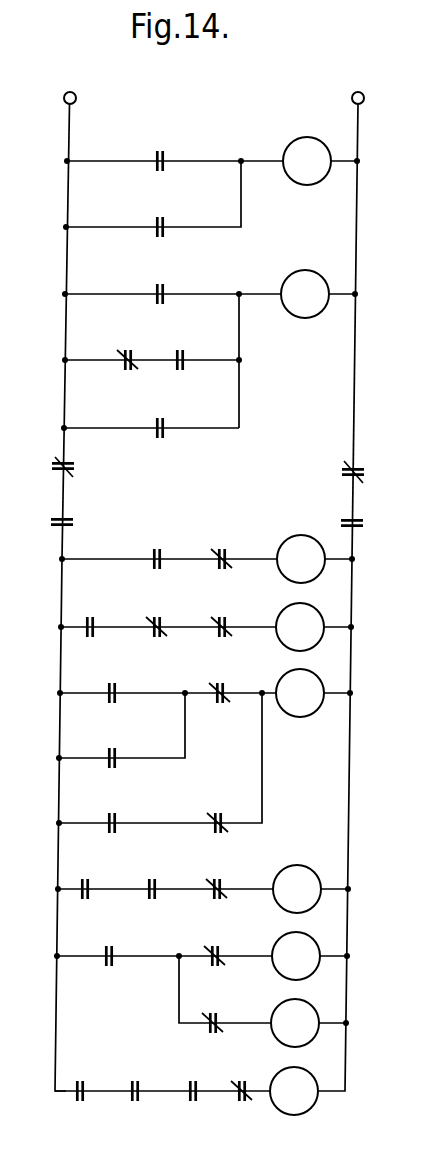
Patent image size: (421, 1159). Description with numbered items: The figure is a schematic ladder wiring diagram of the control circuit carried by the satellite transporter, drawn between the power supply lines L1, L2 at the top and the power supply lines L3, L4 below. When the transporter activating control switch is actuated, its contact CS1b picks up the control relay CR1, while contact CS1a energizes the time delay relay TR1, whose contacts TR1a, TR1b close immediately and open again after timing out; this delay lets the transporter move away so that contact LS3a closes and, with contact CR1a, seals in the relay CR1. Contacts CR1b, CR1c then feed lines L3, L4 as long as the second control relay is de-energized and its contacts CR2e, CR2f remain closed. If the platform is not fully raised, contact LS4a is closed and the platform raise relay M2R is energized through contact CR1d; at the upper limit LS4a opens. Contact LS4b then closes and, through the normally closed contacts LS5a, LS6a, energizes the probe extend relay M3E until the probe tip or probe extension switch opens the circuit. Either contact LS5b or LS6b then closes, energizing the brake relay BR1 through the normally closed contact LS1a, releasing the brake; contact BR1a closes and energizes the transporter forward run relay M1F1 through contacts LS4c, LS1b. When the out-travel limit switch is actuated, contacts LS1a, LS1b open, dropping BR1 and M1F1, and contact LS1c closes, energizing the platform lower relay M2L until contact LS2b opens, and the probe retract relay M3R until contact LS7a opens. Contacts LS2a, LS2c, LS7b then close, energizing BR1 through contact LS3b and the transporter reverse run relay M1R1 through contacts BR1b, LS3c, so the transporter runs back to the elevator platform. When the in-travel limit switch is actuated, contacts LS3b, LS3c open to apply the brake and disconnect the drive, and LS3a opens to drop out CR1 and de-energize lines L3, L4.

The power supply line L1 is at (72, 313).
The power supply line L2 is at (357, 314).
The power supply line L3 is at (48, 819).
The power supply line L4 is at (350, 820).
The transporter activating control switch contact CS1a is at (185, 153).
The transporter activating control switch contact CS1b is at (187, 289).
The time delay relay TR1 is at (307, 161).
The time delay relay contact TR1a is at (185, 220).
The time delay relay contact TR1b is at (185, 419).
The control relay CR1 is at (305, 294).
The control relay contact CR1a is at (205, 350).
The control relay contact CR1b is at (87, 515).
The control relay contact CR1c is at (329, 512).
The control relay contact CR1d is at (171, 547).
The control relay contact CR2e is at (93, 468).
The control relay contact CR2f is at (329, 464).
The transporter out-travel limit switch contact LS1a is at (224, 681).
The transporter out-travel limit switch contact LS1b is at (227, 877).
The transporter out-travel limit switch contact LS1c is at (112, 945).
The transporter platform low limit switch contact LS2a is at (139, 812).
The transporter platform low limit switch contact LS2b is at (225, 945).
The transporter platform low limit switch contact LS2c is at (140, 1105).
The transporter in-travel limit switch contact LS3a is at (105, 351).
The transporter in-travel limit switch contact LS3b is at (226, 812).
The transporter in-travel limit switch contact LS3c is at (246, 1105).
The transporter platform travel upper limit switch contact LS4a is at (239, 547).
The transporter platform travel upper limit switch contact LS4b is at (94, 616).
The transporter platform travel upper limit switch contact LS4c is at (157, 877).
The probe tip limit switch contact LS5a is at (164, 616).
The probe tip limit switch contact LS5b is at (111, 681).
The probe extension limit switch contact LS6a is at (235, 616).
The probe extension limit switch contact LS6b is at (124, 748).
The probe retraction limit switch contact LS7a is at (224, 1012).
The probe retraction limit switch contact LS7b is at (86, 1080).
The brake relay BR1 is at (300, 693).
The brake relay contact BR1a is at (85, 877).
The brake relay contact BR1b is at (195, 1080).
The platform raise relay M2R is at (301, 559).
The platform lower relay M2L is at (296, 956).
The probe extend relay M3E is at (300, 627).
The probe retract relay M3R is at (295, 1023).
The transporter forward run relay M1F1 is at (297, 889).
The transporter reverse run relay M1R1 is at (294, 1091).